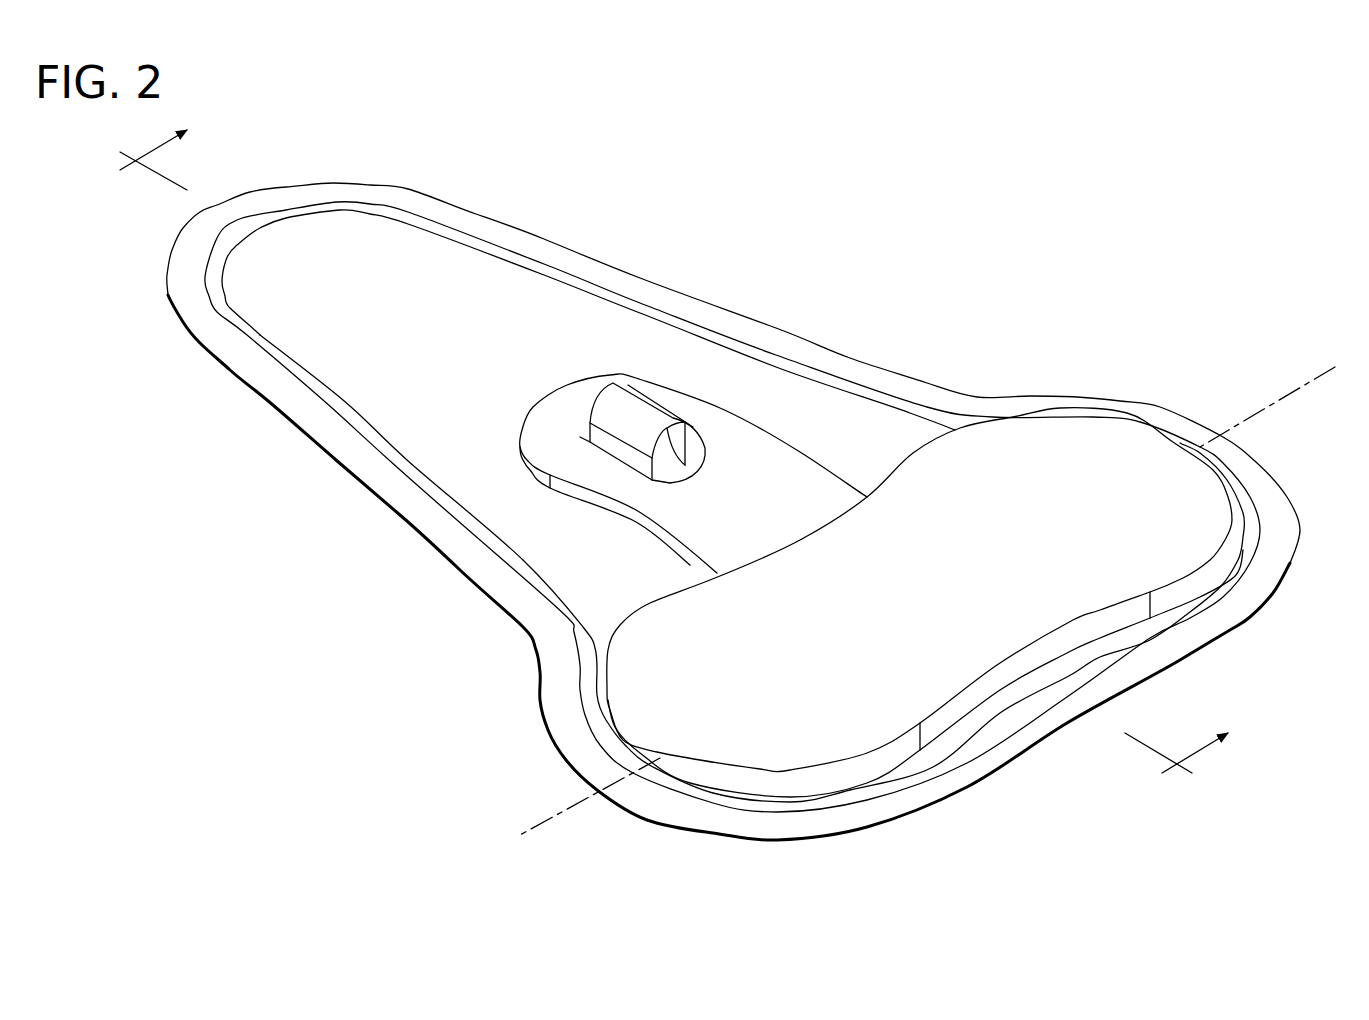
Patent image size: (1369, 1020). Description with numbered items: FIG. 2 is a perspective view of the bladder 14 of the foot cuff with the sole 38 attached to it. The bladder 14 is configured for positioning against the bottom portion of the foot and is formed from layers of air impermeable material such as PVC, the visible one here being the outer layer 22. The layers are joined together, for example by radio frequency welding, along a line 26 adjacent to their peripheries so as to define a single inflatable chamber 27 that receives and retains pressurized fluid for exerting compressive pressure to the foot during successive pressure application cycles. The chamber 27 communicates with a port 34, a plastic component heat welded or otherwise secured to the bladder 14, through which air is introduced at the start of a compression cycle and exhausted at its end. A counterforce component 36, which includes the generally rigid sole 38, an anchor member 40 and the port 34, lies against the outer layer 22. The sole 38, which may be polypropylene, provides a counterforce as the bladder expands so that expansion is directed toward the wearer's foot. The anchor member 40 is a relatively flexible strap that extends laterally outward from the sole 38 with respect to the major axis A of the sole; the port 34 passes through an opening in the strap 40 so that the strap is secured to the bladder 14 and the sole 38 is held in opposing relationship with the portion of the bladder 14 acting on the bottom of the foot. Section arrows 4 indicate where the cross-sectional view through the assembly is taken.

The bladder 14 is at (712, 215).
The outer layer 22 is at (350, 450).
The line 26 is at (528, 267).
The inflatable chamber 27 is at (368, 263).
The port 34 is at (638, 400).
The counterforce component 36 is at (1011, 438).
The sole 38 is at (1128, 460).
The anchor member 40 is at (783, 443).
The major axis A is at (1260, 400).
The section line 4 is at (659, 467).